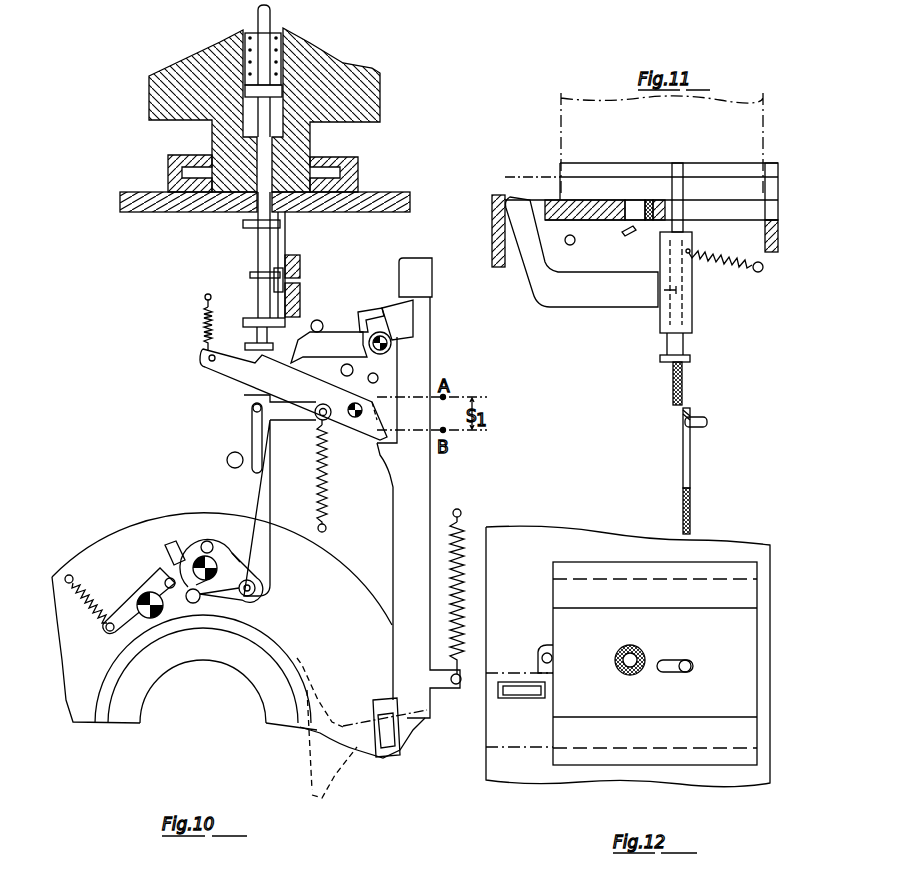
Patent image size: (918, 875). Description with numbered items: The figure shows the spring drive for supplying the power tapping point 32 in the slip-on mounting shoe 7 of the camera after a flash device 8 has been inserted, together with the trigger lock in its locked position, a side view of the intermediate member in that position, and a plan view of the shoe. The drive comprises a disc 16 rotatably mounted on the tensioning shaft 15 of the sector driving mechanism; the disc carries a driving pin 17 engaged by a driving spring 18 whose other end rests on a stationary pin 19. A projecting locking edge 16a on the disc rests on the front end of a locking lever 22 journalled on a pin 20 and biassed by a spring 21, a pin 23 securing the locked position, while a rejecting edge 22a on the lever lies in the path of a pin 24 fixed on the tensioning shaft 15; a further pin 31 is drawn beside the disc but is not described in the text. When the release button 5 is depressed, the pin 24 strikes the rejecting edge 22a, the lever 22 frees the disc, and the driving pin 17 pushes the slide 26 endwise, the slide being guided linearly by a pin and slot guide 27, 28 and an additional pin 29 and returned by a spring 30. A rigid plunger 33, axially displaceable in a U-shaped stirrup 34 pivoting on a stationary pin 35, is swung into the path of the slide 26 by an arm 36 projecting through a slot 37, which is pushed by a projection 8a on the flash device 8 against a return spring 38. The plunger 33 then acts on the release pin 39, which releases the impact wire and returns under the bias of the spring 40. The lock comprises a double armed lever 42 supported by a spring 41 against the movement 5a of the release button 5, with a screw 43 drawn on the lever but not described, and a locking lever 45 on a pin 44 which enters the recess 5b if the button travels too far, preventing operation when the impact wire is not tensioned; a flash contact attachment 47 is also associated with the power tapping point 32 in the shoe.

In FIG. 10, the camera release button 5 is at (420, 355).
In FIG. 10, the movement of the release button 5a is at (388, 452).
In FIG. 10, the recess 5b is at (388, 308).
In FIG. 10, the mounting shoe 7 is at (353, 167).
In FIG. 11, the mounting shoe 7 is at (770, 175).
In FIG. 10, the flash device 8 is at (375, 98).
In FIG. 11, the flash device 8 is at (710, 132).
In FIG. 11, the projection 8a is at (508, 173).
In FIG. 12, the projection 8a is at (527, 737).
In FIG. 10, the tensioning shaft 15 is at (203, 600).
In FIG. 10, the disc 16 is at (204, 583).
In FIG. 10, the projecting locking edge 16a is at (190, 555).
In FIG. 10, the driving pin 17 is at (256, 588).
In FIG. 10, the driving spring 18 is at (232, 590).
In FIG. 10, the stationary pin 19 is at (189, 604).
In FIG. 10, the pin 20 is at (148, 619).
In FIG. 10, the spring 21 is at (87, 612).
In FIG. 10, the locking lever 22 is at (158, 573).
In FIG. 10, the rejecting edge 22a is at (176, 560).
In FIG. 10, the pin 23 is at (165, 583).
In FIG. 10, the pin 24 is at (200, 558).
In FIG. 10, the slide 26 is at (244, 490).
In FIG. 11, the slide 26 is at (683, 500).
In FIG. 10, the pin of the pin and slot guide 27 is at (254, 408).
In FIG. 11, the pin of the pin and slot guide 27 is at (699, 417).
In FIG. 10, the slot of the pin and slot guide 28 is at (252, 428).
In FIG. 11, the slot of the pin and slot guide 28 is at (683, 447).
In FIG. 10, the additional pin 29 is at (227, 460).
In FIG. 10, the spring 30 is at (317, 455).
In FIG. 10, the pin 31 is at (211, 542).
In FIG. 11, the power tapping point 32 is at (704, 190).
In FIG. 12, the power tapping point 32 is at (663, 658).
In FIG. 10, the plunger 33 is at (240, 210).
In FIG. 11, the plunger 33 is at (678, 197).
In FIG. 12, the plunger 33 is at (689, 658).
In FIG. 10, the U-shaped stirrup 34 is at (284, 250).
In FIG. 11, the U-shaped stirrup 34 is at (692, 302).
In FIG. 10, the stationary pin 35 is at (300, 277).
In FIG. 11, the stationary pin 35 is at (670, 290).
In FIG. 10, the arm 36 is at (320, 210).
In FIG. 11, the arm 36 is at (520, 205).
In FIG. 12, the arm 36 is at (508, 693).
In FIG. 11, the slot 37 is at (545, 203).
In FIG. 12, the slot 37 is at (527, 681).
In FIG. 11, the spring 38 is at (722, 263).
In FIG. 10, the release pin 39 is at (267, 55).
In FIG. 10, the spring 40 is at (248, 53).
In FIG. 10, the spring 41 is at (203, 322).
In FIG. 10, the double armed lever 42 is at (338, 403).
In FIG. 11, the double armed lever 42 is at (673, 385).
In FIG. 10, the screw 43 is at (355, 404).
In FIG. 10, the pin 44 is at (389, 341).
In FIG. 10, the locking lever 45 is at (335, 340).
In FIG. 11, the flash contact attachment 47 is at (639, 194).
In FIG. 12, the flash contact attachment 47 is at (620, 668).